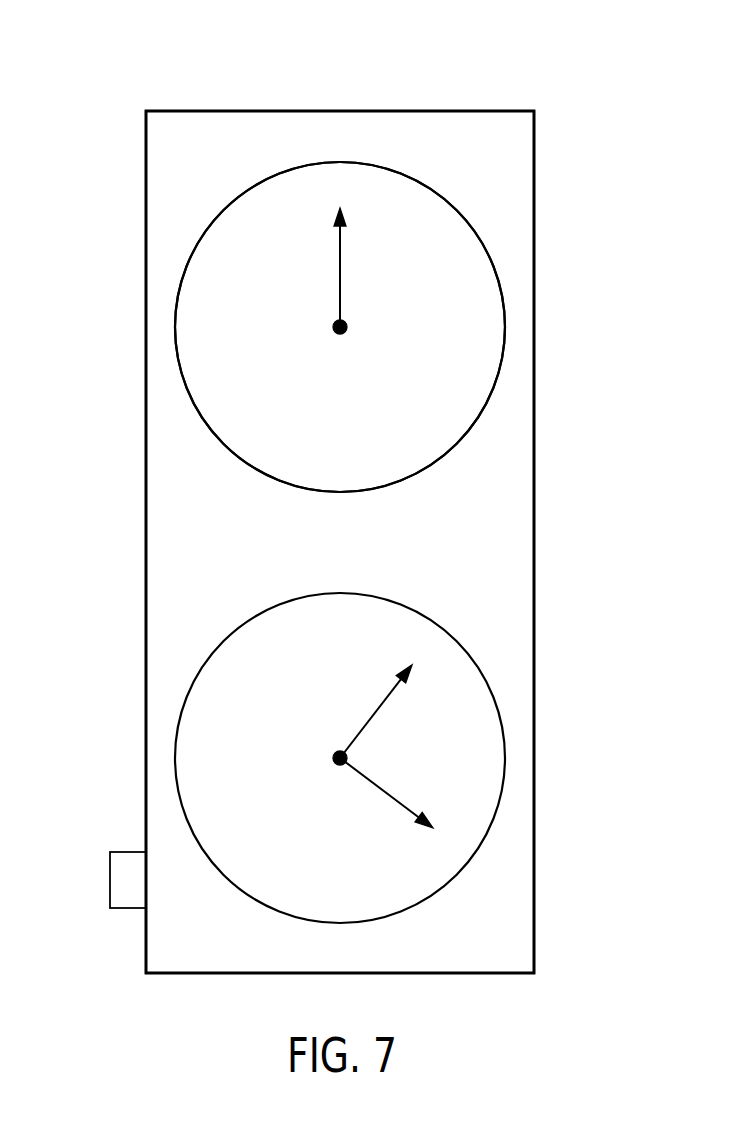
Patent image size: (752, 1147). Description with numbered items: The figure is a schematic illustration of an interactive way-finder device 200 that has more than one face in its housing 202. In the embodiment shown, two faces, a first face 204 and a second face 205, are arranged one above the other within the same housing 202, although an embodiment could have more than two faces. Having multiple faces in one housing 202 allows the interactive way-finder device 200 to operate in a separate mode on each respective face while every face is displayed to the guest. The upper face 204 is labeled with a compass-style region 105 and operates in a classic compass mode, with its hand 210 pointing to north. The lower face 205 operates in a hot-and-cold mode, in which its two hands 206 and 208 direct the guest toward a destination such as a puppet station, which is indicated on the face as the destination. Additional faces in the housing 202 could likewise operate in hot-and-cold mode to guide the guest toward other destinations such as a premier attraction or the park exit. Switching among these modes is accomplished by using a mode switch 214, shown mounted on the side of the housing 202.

The interactive way-finder device 200 is at (500, 70).
The housing 202 is at (534, 162).
The first display area 105 is at (470, 201).
The face 204 is at (477, 293).
The hand 210 is at (340, 270).
The face 205 is at (472, 652).
The hand 208 is at (372, 715).
The hand 206 is at (383, 790).
The mode switch 214 is at (110, 879).